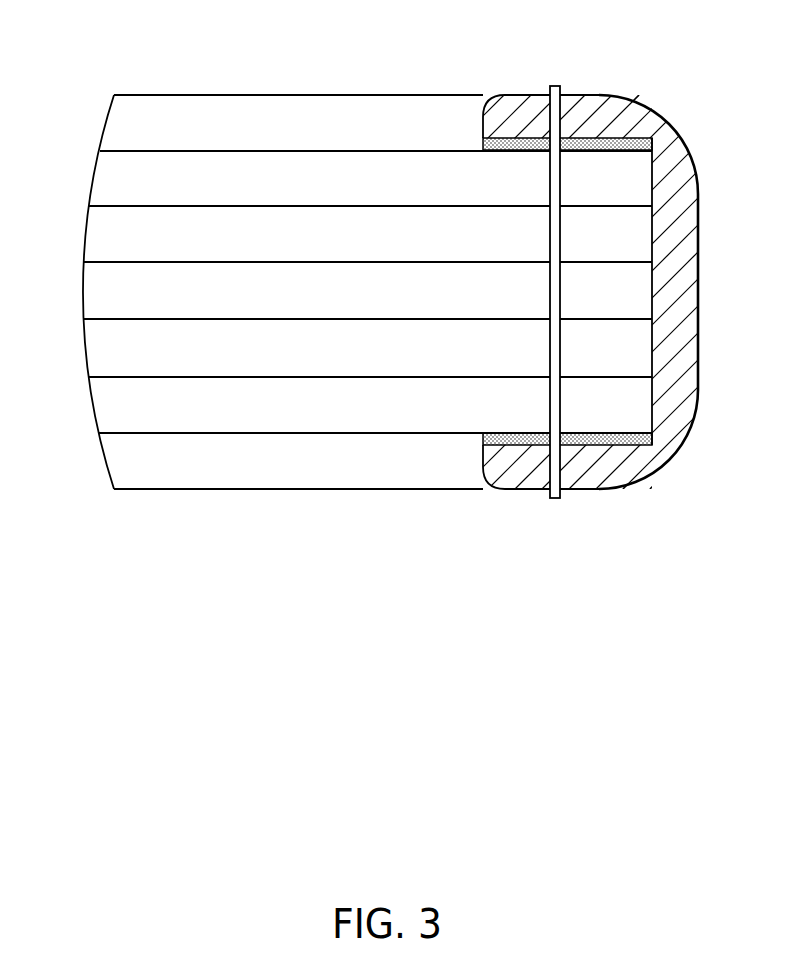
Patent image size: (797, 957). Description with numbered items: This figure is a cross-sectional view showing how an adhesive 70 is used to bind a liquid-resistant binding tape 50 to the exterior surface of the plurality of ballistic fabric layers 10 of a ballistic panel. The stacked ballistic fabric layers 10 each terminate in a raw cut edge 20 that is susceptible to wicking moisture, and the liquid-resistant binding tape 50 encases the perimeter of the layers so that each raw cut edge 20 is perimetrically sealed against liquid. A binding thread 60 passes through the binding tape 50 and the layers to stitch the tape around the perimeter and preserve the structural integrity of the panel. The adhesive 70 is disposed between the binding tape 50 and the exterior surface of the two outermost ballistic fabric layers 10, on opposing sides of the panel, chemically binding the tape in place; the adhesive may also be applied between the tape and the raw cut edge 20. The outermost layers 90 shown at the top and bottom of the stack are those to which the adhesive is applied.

The ballistic fabric layers 10 is at (101, 181).
The raw cut edge 20 is at (655, 183).
The liquid-resistant binding tape 50 is at (628, 112).
The binding thread 60 is at (557, 86).
The adhesive 70 is at (502, 147).
The outer layer 90 is at (392, 150).